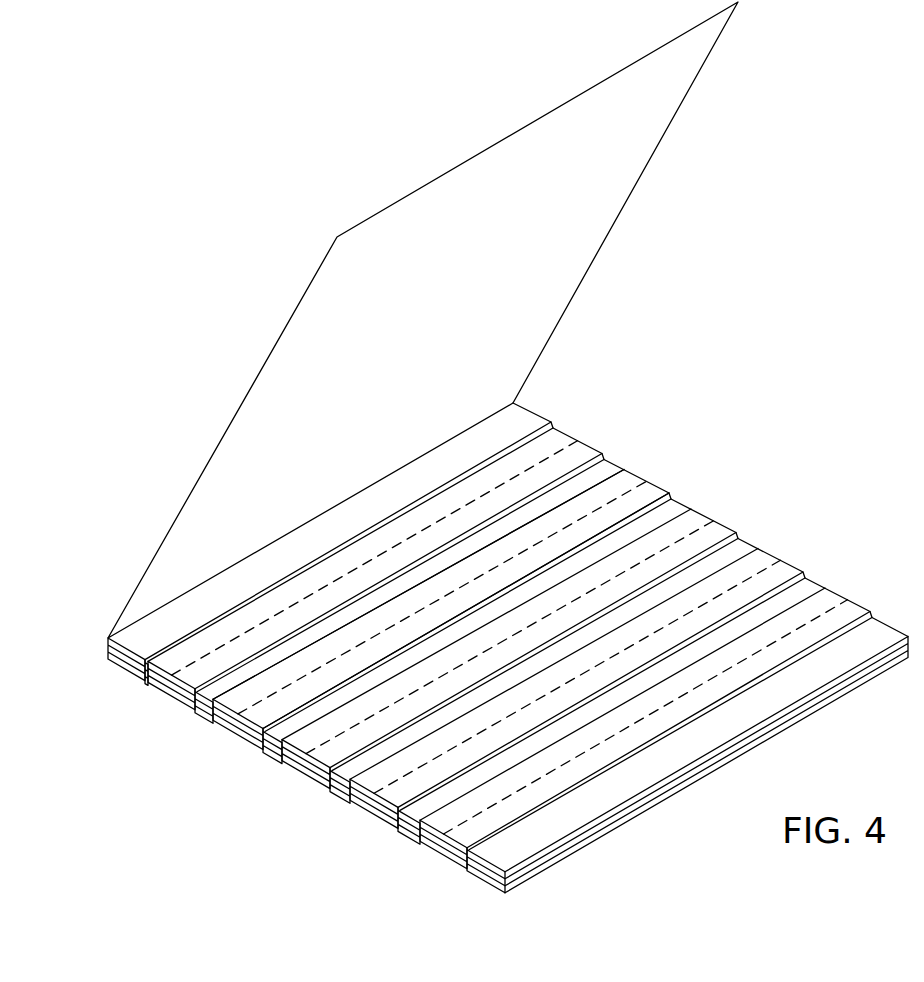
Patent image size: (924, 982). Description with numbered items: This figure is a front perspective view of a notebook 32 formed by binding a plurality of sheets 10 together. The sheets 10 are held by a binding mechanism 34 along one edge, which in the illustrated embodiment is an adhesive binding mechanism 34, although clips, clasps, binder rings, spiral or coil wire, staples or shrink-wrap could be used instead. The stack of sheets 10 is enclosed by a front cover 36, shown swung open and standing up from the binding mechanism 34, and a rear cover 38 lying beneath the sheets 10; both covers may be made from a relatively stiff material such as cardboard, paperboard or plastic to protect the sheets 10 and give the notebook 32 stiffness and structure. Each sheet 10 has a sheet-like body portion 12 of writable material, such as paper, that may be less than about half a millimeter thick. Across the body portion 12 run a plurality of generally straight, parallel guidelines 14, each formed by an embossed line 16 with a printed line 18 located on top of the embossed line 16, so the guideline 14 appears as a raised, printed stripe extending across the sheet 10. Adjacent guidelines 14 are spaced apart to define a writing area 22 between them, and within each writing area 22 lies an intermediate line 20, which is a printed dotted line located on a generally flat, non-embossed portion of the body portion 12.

The sheet 10 is at (652, 487).
The body portion 12 is at (604, 458).
The guideline 14 is at (523, 492).
The embossed line 16 is at (212, 703).
The printed line 18 is at (480, 518).
The intermediate line 20 is at (766, 556).
The writing area 22 is at (699, 538).
The notebook 32 is at (722, 395).
The binding mechanism 34 is at (107, 648).
The front cover 36 is at (256, 390).
The rear cover 38 is at (578, 852).